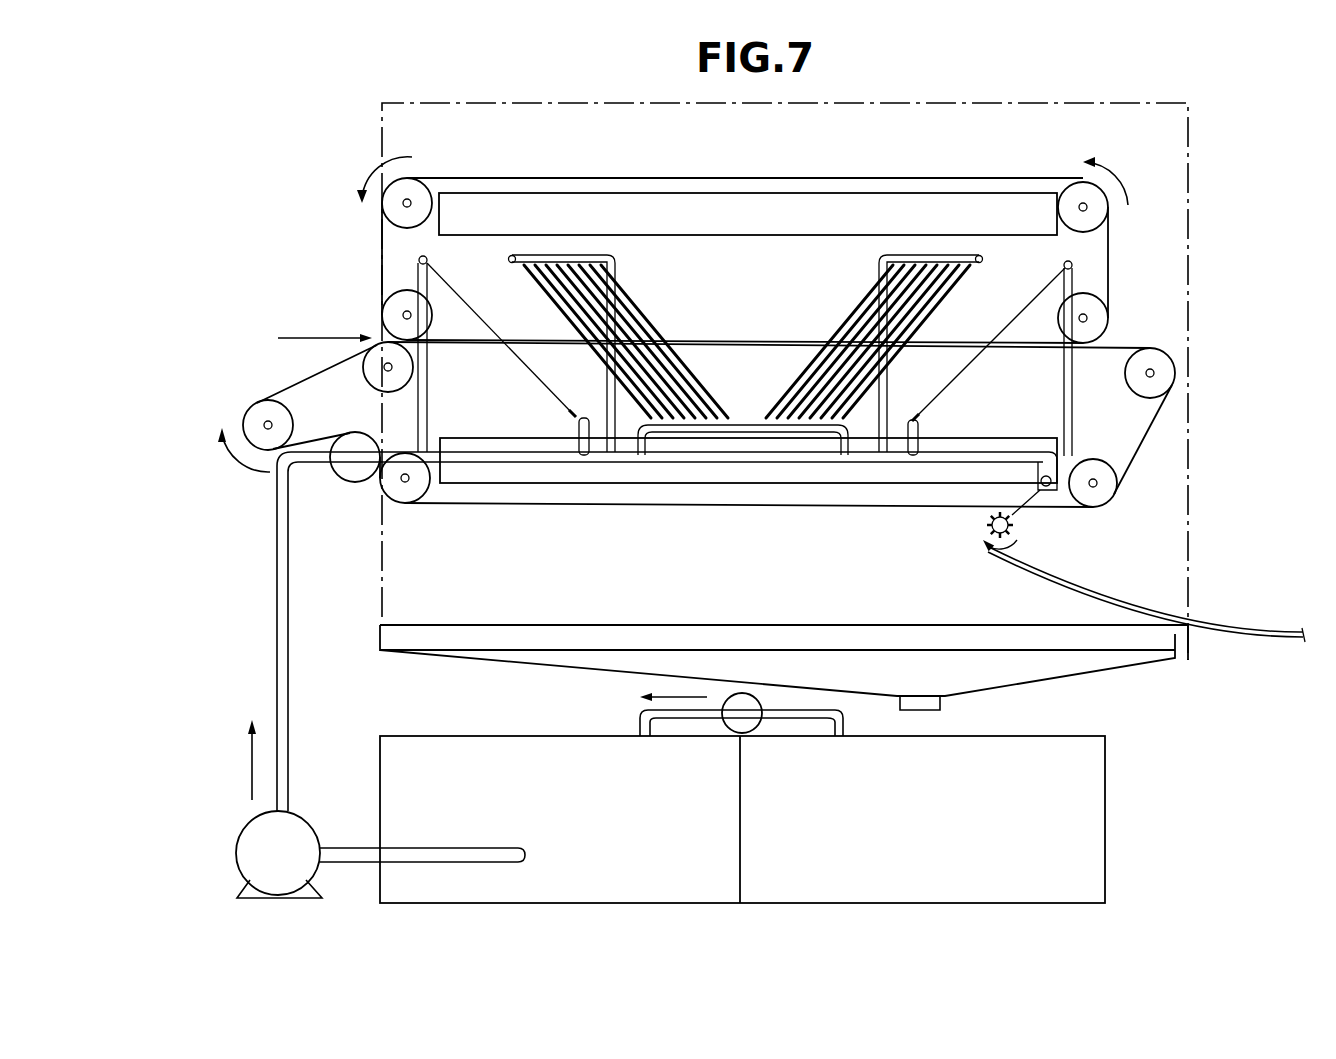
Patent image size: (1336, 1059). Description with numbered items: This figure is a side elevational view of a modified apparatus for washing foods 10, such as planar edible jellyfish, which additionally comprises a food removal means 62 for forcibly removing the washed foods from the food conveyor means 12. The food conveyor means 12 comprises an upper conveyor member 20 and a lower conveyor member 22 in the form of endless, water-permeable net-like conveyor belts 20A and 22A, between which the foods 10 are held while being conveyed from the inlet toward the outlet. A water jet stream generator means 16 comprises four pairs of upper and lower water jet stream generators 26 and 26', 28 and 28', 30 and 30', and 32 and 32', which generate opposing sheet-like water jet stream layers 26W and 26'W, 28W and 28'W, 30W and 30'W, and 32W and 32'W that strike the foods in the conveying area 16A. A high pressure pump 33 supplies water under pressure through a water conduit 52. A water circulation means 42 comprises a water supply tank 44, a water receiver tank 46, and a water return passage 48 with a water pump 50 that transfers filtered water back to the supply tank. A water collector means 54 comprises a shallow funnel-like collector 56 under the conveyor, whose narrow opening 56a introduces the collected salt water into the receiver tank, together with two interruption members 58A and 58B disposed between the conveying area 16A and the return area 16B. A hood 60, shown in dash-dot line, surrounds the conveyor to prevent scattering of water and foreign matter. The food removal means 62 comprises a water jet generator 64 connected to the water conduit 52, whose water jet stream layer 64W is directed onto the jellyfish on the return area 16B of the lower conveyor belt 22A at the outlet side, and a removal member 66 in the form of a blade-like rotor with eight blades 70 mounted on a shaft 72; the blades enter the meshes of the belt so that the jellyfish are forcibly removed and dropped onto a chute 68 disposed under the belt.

The foods 10 is at (693, 338).
The food conveyor means 12 is at (1158, 313).
The water jet stream generator means 16 is at (528, 230).
The conveying area 16A is at (736, 338).
The return area 16B is at (738, 177).
The upper conveyor member 20 is at (888, 170).
The upper conveyor belt 20A is at (975, 177).
The lower conveyor member 22 is at (306, 360).
The lower conveyor belt 22A is at (1147, 437).
The upper water jet stream generator 26 is at (366, 346).
The water jet stream layer 26W is at (476, 316).
The lower water jet stream generator 26' is at (589, 490).
The water jet stream layer 26'W is at (499, 385).
The upper water jet stream generator 28 is at (619, 296).
The water jet stream layer 28W is at (632, 297).
The lower water jet stream generator 28' is at (743, 489).
The water jet stream layer 28'W is at (740, 380).
The upper water jet stream generator 30 is at (874, 327).
The water jet stream layer 30W is at (840, 328).
The lower water jet stream generator 30' is at (737, 503).
The water jet stream layer 30'W is at (906, 376).
The upper water jet stream generator 32 is at (1116, 345).
The water jet stream layer 32W is at (1018, 321).
The lower water jet stream generator 32' is at (843, 491).
The water jet stream layer 32'W is at (1003, 375).
The high pressure pump 33 is at (256, 843).
The water circulation means 42 is at (256, 633).
The water supply tank 44 is at (392, 768).
The water receiver tank 46 is at (1098, 812).
The water return passage 48 is at (809, 732).
The water pump 50 is at (748, 722).
The water conduit 52 is at (277, 575).
The water collector means 54 is at (1205, 658).
The funnel-like collector 56 is at (385, 640).
The narrow opening 56a is at (915, 708).
The interruption member 58A is at (648, 205).
The interruption member 58B is at (507, 475).
The hood 60 is at (382, 132).
The food removal means 62 is at (901, 546).
The water jet generator 64 is at (1034, 466).
The water jet stream layer 64W is at (1043, 513).
The removal member 66 is at (1030, 528).
The chute 68 is at (1095, 608).
The blades 70 is at (985, 532).
The shaft 72 is at (989, 519).